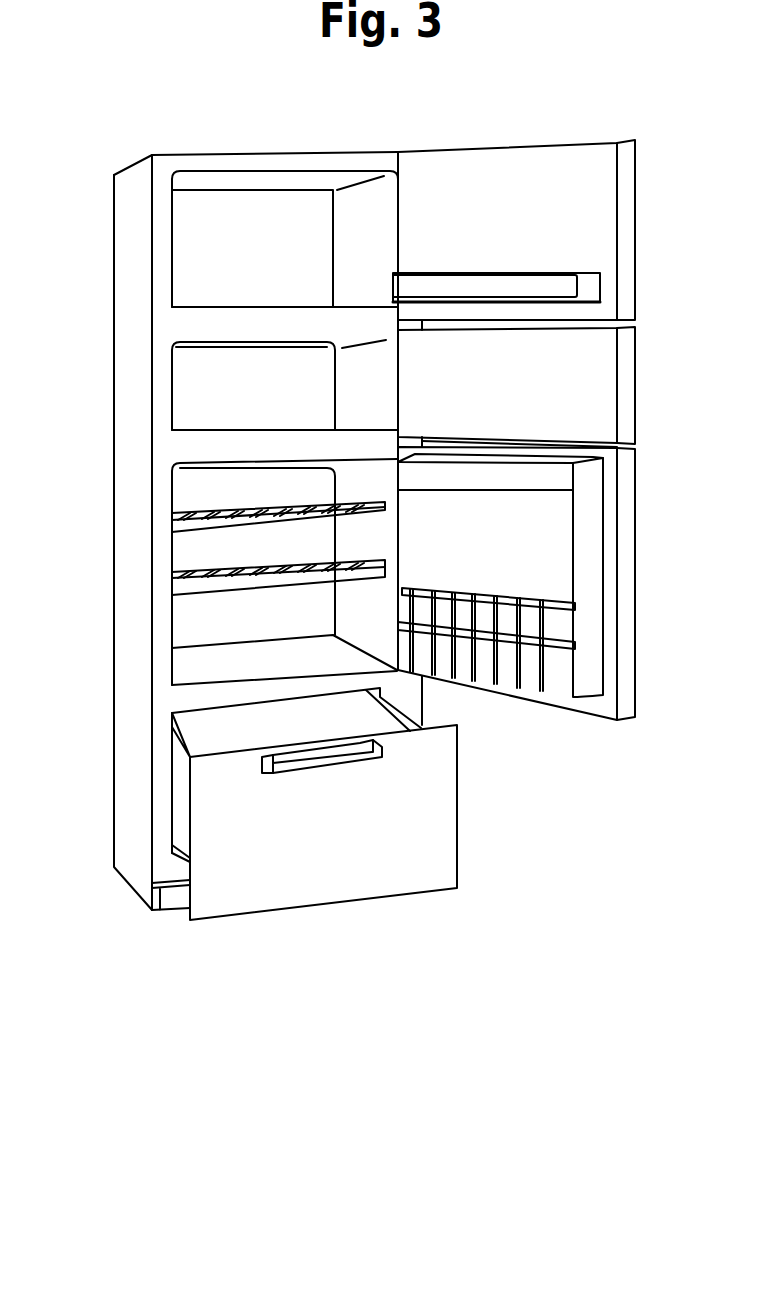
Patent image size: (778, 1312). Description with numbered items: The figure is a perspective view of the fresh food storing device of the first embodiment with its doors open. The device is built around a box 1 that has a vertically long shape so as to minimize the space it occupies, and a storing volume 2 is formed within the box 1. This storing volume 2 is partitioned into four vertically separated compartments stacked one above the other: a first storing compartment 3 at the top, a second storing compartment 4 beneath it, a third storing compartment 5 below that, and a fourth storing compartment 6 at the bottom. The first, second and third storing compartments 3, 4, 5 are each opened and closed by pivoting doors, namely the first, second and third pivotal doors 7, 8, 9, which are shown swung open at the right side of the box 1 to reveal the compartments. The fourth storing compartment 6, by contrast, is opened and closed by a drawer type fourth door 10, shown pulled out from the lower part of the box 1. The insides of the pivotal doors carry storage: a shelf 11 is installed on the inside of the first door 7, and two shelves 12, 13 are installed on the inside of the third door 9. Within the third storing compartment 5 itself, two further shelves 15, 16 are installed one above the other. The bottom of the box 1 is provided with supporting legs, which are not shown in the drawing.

The box 1 is at (82, 865).
The storing volume 2 is at (207, 194).
The first storing compartment 3 is at (242, 200).
The second storing compartment 4 is at (238, 350).
The third storing compartment 5 is at (208, 475).
The fourth storing compartment 6 is at (330, 720).
The first pivotal door 7 is at (483, 157).
The second pivotal door 8 is at (595, 402).
The third pivotal door 9 is at (622, 557).
The drawer type fourth door 10 is at (440, 790).
The shelf 11 is at (488, 273).
The shelf 12 is at (550, 482).
The shelf 13 is at (545, 626).
The shelf 15 is at (295, 512).
The shelf 16 is at (288, 578).